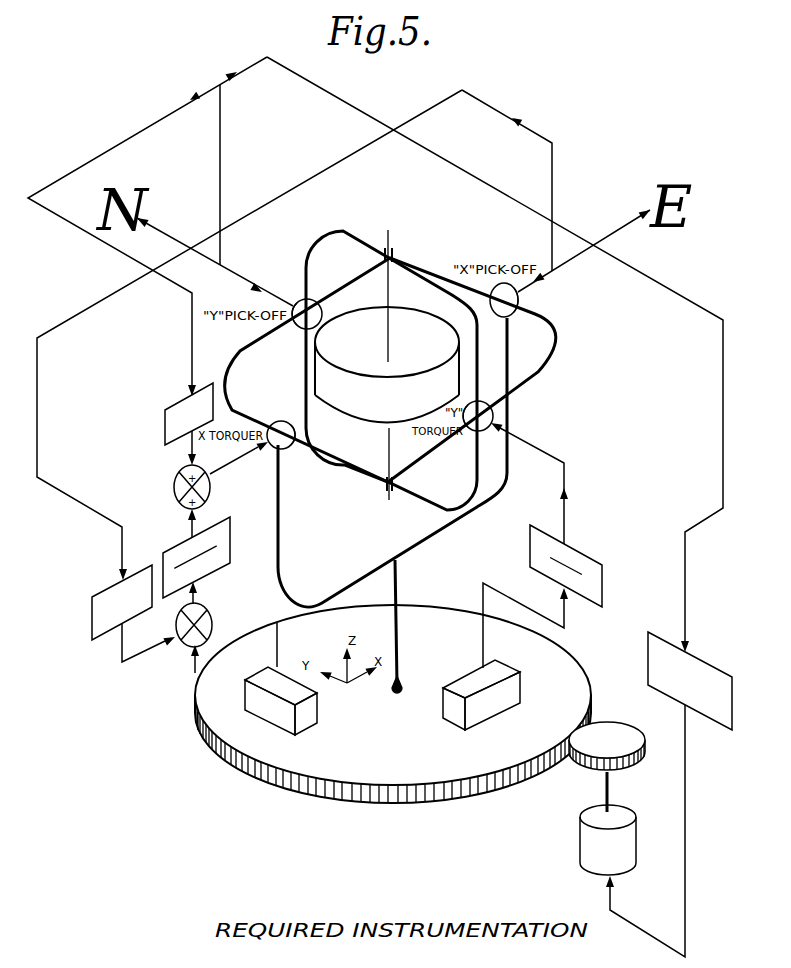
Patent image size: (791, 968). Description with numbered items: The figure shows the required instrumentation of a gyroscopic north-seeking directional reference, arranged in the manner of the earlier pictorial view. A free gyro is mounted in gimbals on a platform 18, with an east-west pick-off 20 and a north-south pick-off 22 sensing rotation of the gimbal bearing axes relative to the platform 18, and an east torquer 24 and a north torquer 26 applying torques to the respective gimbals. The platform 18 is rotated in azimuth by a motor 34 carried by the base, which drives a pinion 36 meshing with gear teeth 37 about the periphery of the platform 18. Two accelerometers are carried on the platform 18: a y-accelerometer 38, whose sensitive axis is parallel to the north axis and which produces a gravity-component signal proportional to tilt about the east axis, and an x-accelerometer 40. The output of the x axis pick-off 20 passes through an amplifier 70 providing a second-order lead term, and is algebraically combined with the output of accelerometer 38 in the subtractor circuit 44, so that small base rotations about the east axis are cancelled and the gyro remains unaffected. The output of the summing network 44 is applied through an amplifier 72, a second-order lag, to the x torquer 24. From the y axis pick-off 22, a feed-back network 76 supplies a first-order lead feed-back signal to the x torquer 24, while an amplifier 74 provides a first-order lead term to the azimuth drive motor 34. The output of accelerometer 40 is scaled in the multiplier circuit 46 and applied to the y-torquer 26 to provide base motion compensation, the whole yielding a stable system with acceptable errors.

The platform 18 is at (558, 703).
The east-west pick-off 20 is at (518, 300).
The north-south pick-off 22 is at (309, 300).
The east torquer 24 is at (282, 421).
The north torquer 26 is at (481, 402).
The motor 34 is at (634, 838).
The pinion 36 is at (624, 732).
The gear teeth 37 is at (522, 773).
The y-accelerometer 38 is at (308, 720).
The x-accelerometer 40 is at (503, 672).
The subtractor circuit 44 is at (208, 612).
The multiplier circuit 46 is at (567, 549).
The second-order lead amplifier 70 is at (120, 585).
The second-order lag amplifier 72 is at (190, 545).
The first-order lead amplifier 74 is at (700, 667).
The feed-back network 76 is at (187, 402).